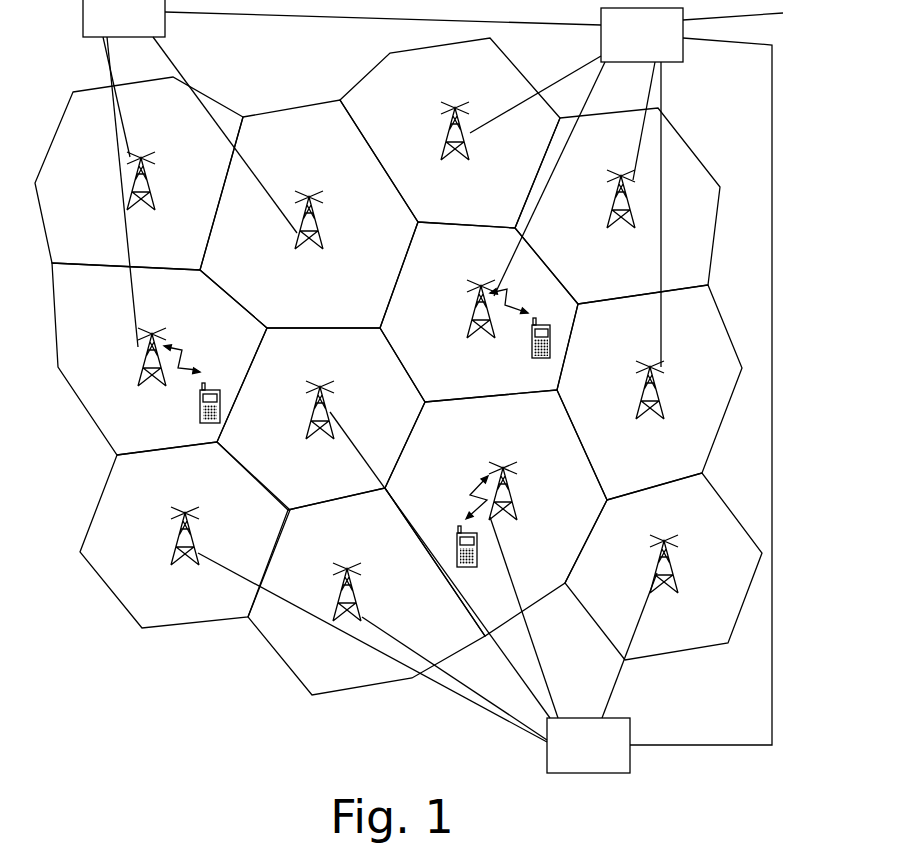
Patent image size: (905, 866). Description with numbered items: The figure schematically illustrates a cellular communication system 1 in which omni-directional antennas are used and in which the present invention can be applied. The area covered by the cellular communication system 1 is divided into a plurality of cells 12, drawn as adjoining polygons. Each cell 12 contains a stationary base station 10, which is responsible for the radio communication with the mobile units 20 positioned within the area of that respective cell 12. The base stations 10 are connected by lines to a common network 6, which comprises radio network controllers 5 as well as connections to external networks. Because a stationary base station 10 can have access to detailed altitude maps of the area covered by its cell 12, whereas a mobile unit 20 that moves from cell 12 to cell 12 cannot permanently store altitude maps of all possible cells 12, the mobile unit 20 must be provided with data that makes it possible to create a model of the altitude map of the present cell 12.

The cellular communication system 1 is at (161, 727).
The radio network controller 5 is at (161, 23).
The common network 6 is at (737, 15).
The base station 10 is at (147, 180).
The cell 12 is at (77, 212).
The mobile unit 20 is at (214, 383).